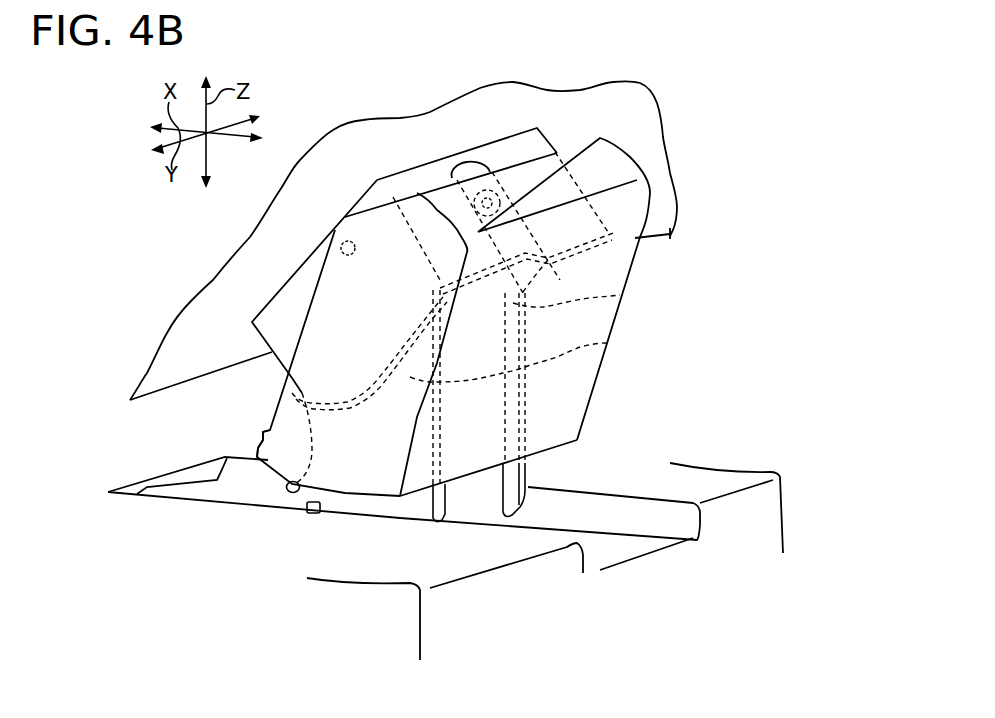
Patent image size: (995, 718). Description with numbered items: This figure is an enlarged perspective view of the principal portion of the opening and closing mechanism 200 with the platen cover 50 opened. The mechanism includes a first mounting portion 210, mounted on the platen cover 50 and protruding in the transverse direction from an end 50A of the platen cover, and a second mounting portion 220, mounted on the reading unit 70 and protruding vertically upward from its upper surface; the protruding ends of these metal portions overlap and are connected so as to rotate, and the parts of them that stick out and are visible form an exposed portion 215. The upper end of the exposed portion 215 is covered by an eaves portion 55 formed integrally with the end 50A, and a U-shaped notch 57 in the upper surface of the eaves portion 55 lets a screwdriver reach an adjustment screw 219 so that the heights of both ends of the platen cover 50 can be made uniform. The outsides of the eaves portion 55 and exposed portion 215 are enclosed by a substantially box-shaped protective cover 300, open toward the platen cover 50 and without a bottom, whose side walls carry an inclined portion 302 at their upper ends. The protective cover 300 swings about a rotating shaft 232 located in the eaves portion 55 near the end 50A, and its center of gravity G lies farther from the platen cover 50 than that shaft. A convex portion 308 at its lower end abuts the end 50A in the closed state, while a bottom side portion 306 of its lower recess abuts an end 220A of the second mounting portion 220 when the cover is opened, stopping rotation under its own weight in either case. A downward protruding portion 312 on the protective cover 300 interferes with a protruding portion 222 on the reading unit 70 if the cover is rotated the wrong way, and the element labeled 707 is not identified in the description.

The platen cover 50 is at (450, 140).
The end of the platen cover 50A is at (170, 366).
The eaves portion 55 is at (517, 147).
The notch 57 is at (468, 176).
The reading unit 70 is at (327, 605).
The opening and closing mechanism 200 is at (628, 399).
The first mounting portion 210 is at (620, 295).
The exposed portion 215 is at (607, 343).
The adjustment screw 219 is at (605, 142).
The second mounting portion 220 is at (492, 482).
The end of the second mounting portion 220A is at (444, 500).
The protruding portion 222 is at (313, 514).
The rotating shaft 232 is at (350, 256).
The protective cover 300 is at (623, 205).
The inclined portion 302 is at (370, 213).
The bottom side portion 306 is at (577, 440).
The convex portion 308 is at (262, 440).
The protruding portion 312 is at (297, 485).
The plate 707 is at (233, 497).
The center of gravity G is at (373, 350).